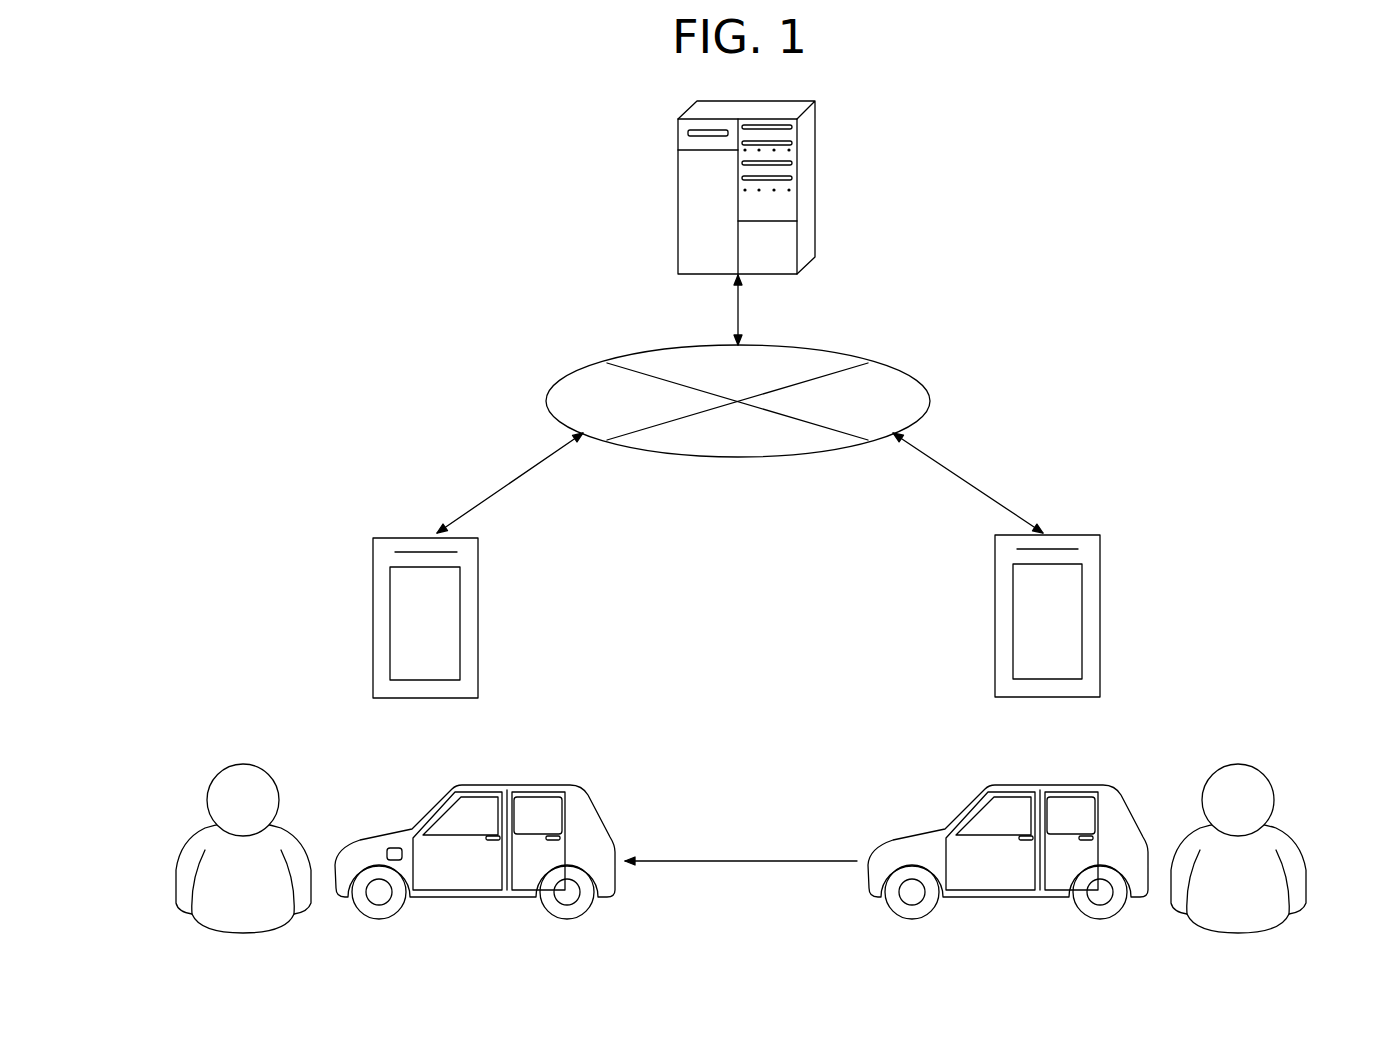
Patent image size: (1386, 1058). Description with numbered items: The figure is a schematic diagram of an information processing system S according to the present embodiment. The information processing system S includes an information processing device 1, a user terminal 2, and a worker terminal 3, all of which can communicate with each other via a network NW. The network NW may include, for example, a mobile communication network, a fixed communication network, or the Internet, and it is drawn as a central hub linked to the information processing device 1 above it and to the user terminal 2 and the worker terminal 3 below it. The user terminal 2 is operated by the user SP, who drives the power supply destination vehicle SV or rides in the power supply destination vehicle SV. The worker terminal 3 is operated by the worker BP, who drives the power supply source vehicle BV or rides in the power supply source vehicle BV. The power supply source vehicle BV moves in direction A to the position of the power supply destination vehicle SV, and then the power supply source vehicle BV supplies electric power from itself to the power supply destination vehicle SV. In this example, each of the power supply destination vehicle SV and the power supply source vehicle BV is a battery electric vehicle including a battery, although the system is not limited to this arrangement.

The information processing device 1 is at (815, 178).
The network NW is at (852, 357).
The user terminal 2 is at (398, 538).
The worker terminal 3 is at (1075, 535).
The information processing system S is at (997, 296).
The user SP is at (196, 832).
The power supply destination vehicle SV is at (533, 783).
The power supply source vehicle BV is at (1063, 783).
The worker BP is at (1287, 830).
The direction A is at (741, 847).